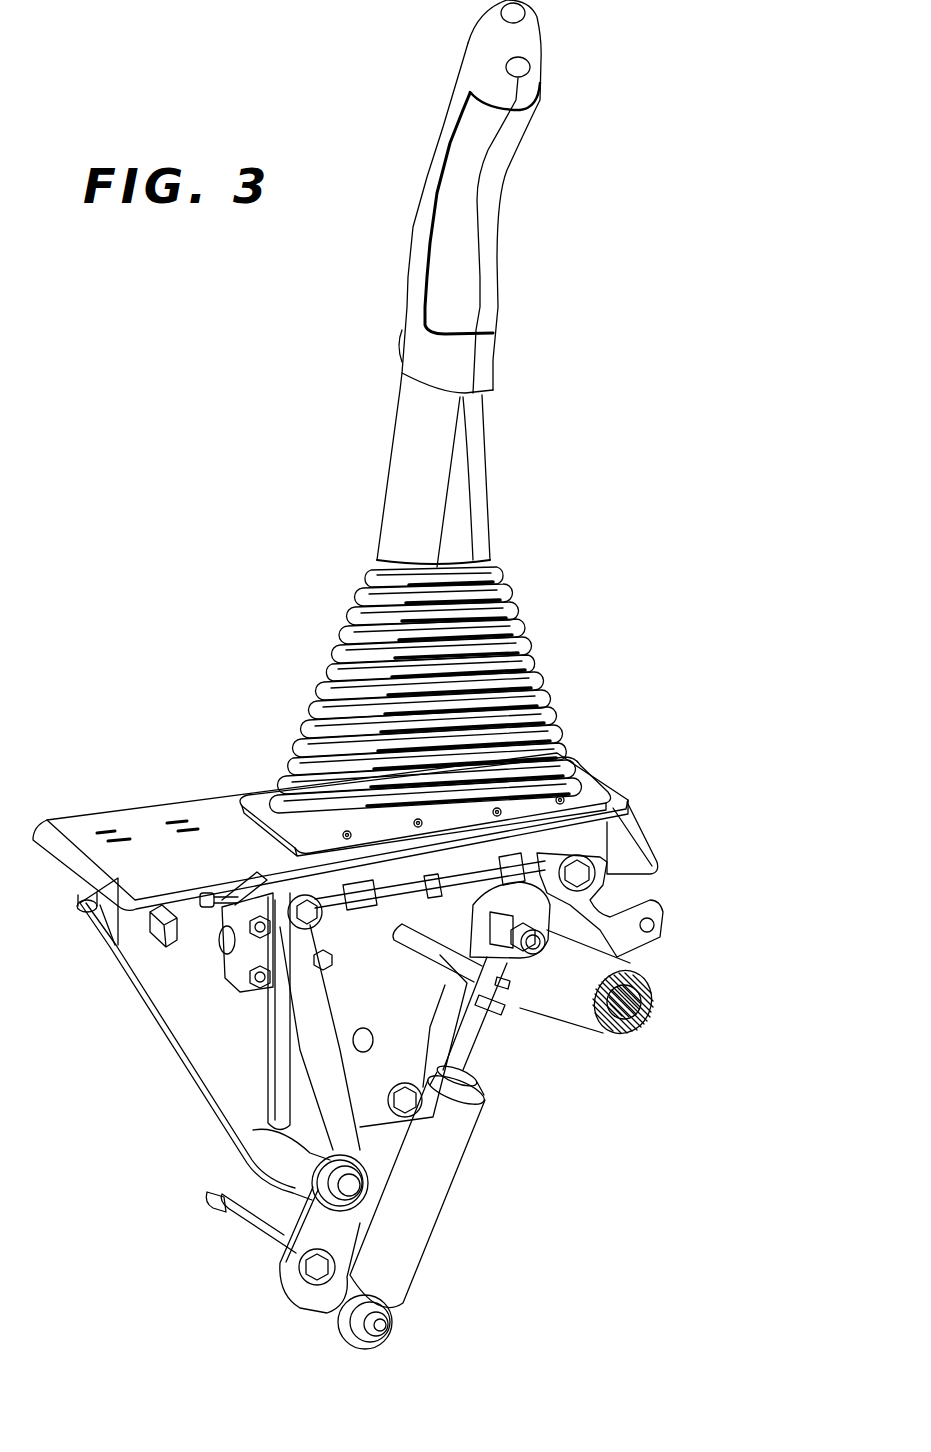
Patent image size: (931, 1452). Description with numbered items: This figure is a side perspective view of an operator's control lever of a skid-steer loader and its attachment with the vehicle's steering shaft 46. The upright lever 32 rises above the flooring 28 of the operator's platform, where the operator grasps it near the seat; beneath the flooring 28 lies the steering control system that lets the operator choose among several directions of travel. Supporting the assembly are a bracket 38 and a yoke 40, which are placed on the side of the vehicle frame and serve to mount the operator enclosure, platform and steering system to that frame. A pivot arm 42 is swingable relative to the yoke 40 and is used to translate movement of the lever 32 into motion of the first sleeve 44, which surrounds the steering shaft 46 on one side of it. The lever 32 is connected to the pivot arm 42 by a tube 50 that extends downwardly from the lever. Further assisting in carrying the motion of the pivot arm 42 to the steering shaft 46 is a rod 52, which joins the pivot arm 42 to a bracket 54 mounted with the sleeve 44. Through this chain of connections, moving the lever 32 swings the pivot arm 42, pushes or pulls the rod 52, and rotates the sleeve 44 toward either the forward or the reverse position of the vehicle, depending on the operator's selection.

The flooring 28 is at (213, 808).
The left lever 32 is at (400, 445).
The bracket 38 is at (422, 1049).
The yoke 40 is at (163, 1005).
The pivot arm 42 is at (307, 1013).
The first sleeve 44 is at (630, 962).
The steering shaft 46 is at (630, 1033).
The tube 50 is at (387, 877).
The rod 52 is at (480, 882).
The bracket 54 is at (580, 912).